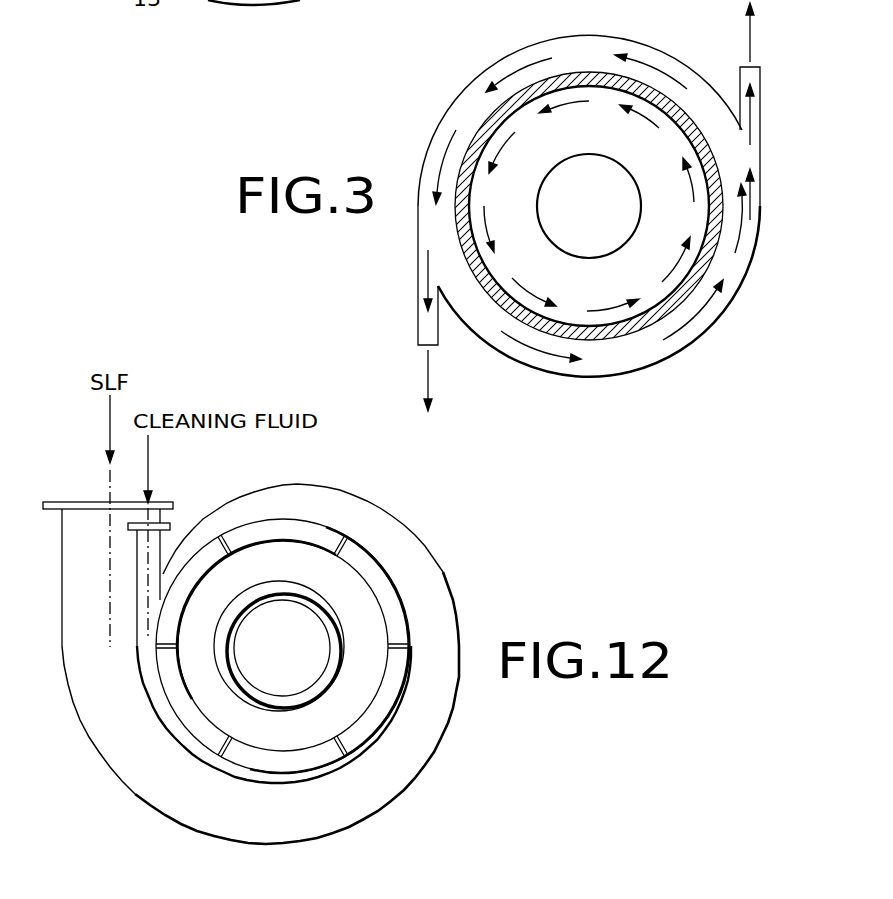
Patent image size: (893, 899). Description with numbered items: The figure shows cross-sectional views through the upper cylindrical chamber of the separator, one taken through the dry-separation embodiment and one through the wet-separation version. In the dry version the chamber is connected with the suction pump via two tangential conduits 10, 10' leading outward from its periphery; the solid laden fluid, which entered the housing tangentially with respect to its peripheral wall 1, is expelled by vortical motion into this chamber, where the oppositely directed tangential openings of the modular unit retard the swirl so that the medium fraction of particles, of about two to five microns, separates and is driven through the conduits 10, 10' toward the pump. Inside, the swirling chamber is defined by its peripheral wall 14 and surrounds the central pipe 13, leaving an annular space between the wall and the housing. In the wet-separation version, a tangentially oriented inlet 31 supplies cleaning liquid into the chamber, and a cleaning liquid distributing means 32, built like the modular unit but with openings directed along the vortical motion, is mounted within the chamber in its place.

In FIG. 12, the peripheral wall 1 is at (443, 573).
In FIG. 3, the tangential conduit 10 is at (404, 308).
In FIG. 3, the tangential conduit 10' is at (776, 111).
In FIG. 3, the central pipe 13 is at (607, 128).
In FIG. 12, the central pipe 13 is at (295, 560).
In FIG. 3, the peripheral wall 14 is at (724, 203).
In FIG. 12, the inlet 31 is at (158, 556).
In FIG. 12, the cleaning liquid distributing means 32 is at (370, 723).